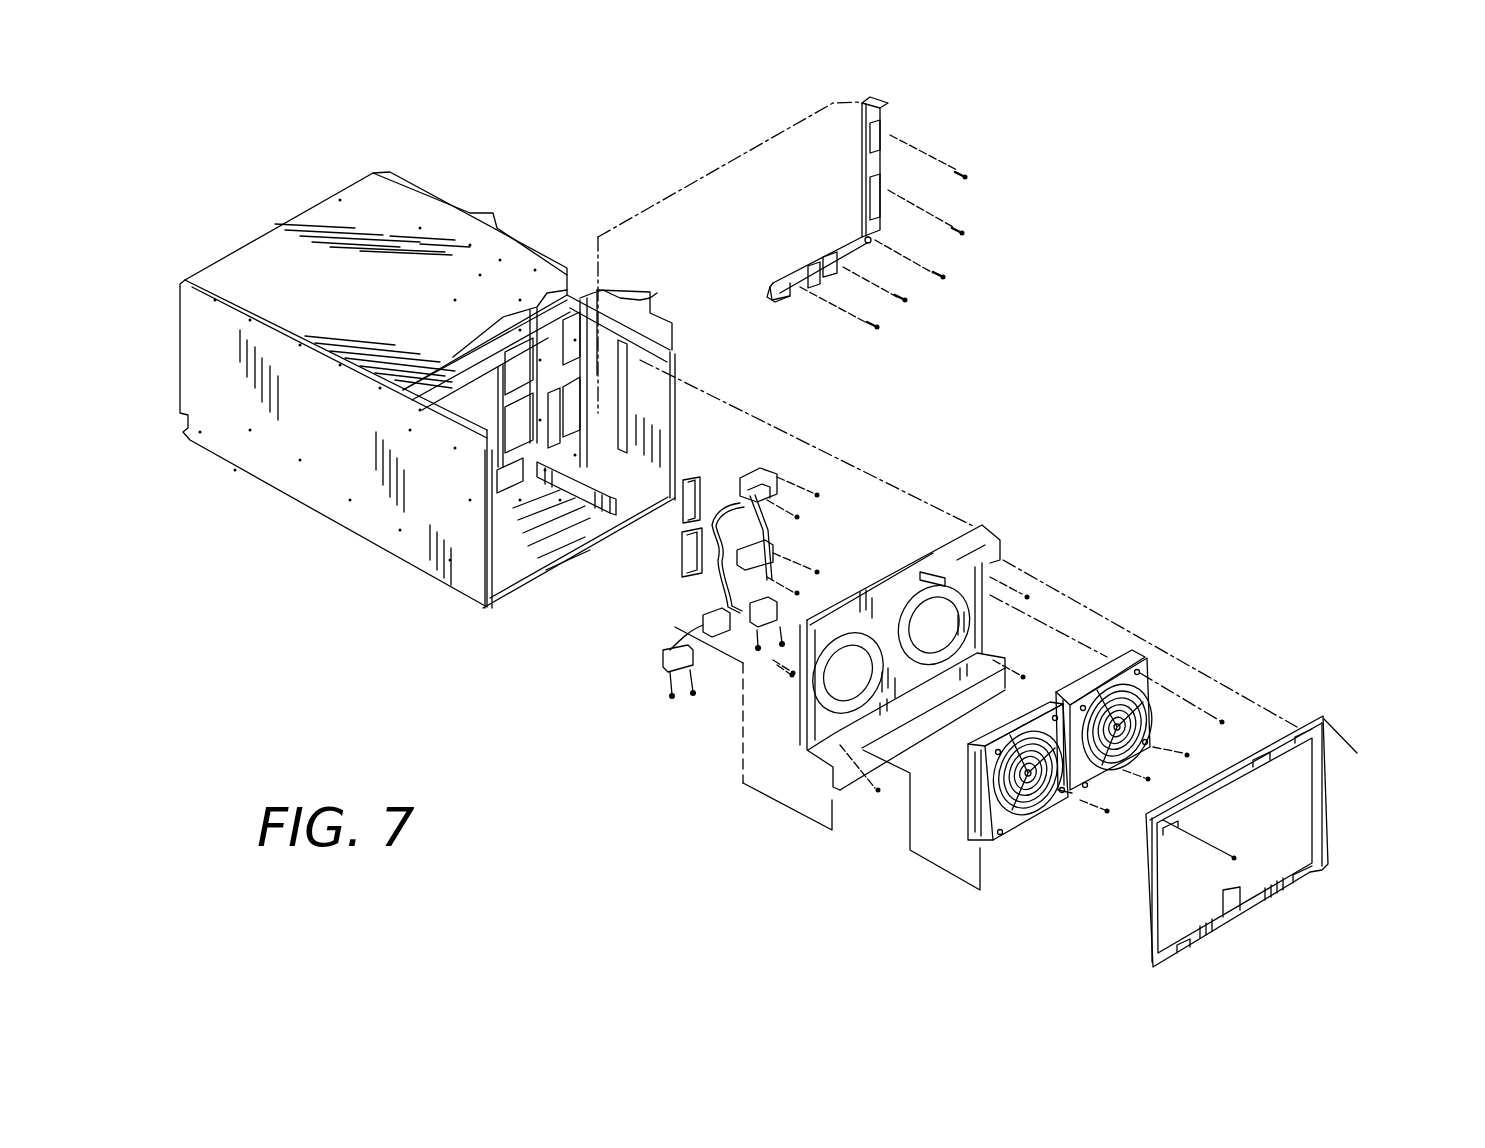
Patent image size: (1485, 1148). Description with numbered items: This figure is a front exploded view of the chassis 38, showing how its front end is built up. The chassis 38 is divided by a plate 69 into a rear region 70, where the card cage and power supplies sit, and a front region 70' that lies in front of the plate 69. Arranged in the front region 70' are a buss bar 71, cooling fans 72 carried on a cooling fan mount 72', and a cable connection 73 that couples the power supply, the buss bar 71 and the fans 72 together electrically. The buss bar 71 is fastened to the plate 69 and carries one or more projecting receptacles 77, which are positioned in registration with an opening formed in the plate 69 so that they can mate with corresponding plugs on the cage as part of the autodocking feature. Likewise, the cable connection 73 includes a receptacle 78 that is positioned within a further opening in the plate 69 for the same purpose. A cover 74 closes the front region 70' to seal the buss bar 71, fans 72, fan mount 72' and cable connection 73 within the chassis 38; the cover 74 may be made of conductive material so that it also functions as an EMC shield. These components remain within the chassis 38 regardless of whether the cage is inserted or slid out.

The chassis 38 is at (307, 543).
The plate 69 is at (483, 400).
The rear region 70 is at (376, 279).
The front region 70' is at (580, 353).
The buss bar 71 is at (880, 104).
The cooling fans 72 is at (1123, 689).
The cooling fan mount 72' is at (906, 656).
The cable connection 73 is at (780, 470).
The cover 74 is at (1325, 710).
The projecting receptacles 77 is at (774, 286).
The receptacle 78 is at (690, 552).